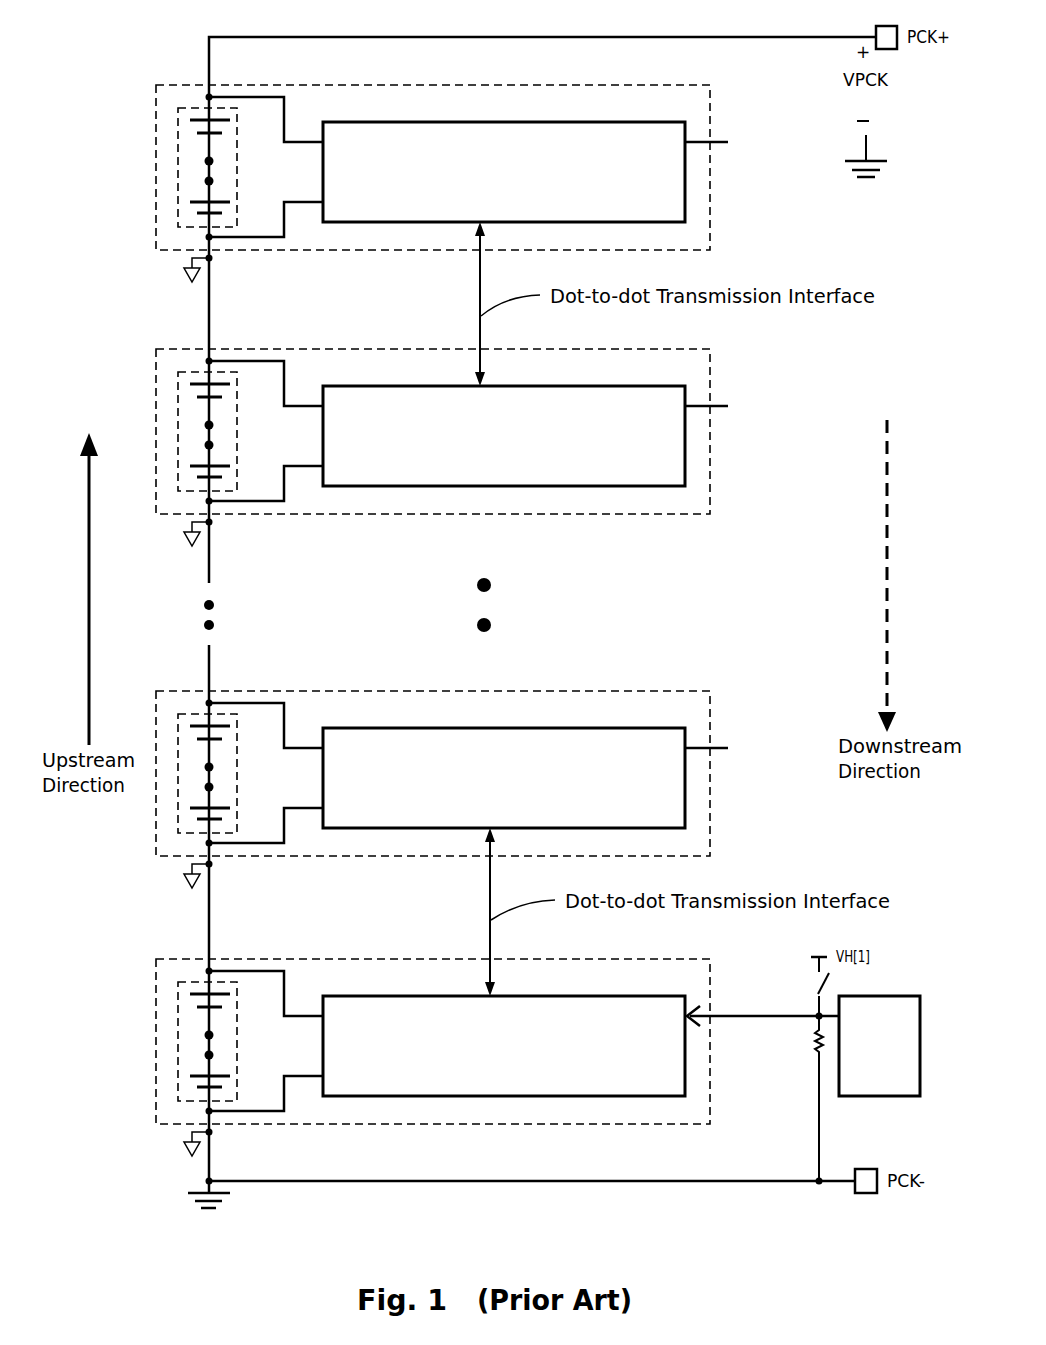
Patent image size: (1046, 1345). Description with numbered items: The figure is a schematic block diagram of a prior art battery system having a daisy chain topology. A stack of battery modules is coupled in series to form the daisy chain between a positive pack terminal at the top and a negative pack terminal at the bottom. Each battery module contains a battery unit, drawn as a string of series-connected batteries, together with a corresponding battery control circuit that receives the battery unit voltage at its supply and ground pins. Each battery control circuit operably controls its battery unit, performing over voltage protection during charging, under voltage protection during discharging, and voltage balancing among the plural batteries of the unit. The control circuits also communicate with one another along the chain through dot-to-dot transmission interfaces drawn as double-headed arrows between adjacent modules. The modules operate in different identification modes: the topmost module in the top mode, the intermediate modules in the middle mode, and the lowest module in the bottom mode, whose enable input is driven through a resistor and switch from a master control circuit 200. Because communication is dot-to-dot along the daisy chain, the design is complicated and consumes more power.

The master control circuit 200 is at (866, 1084).